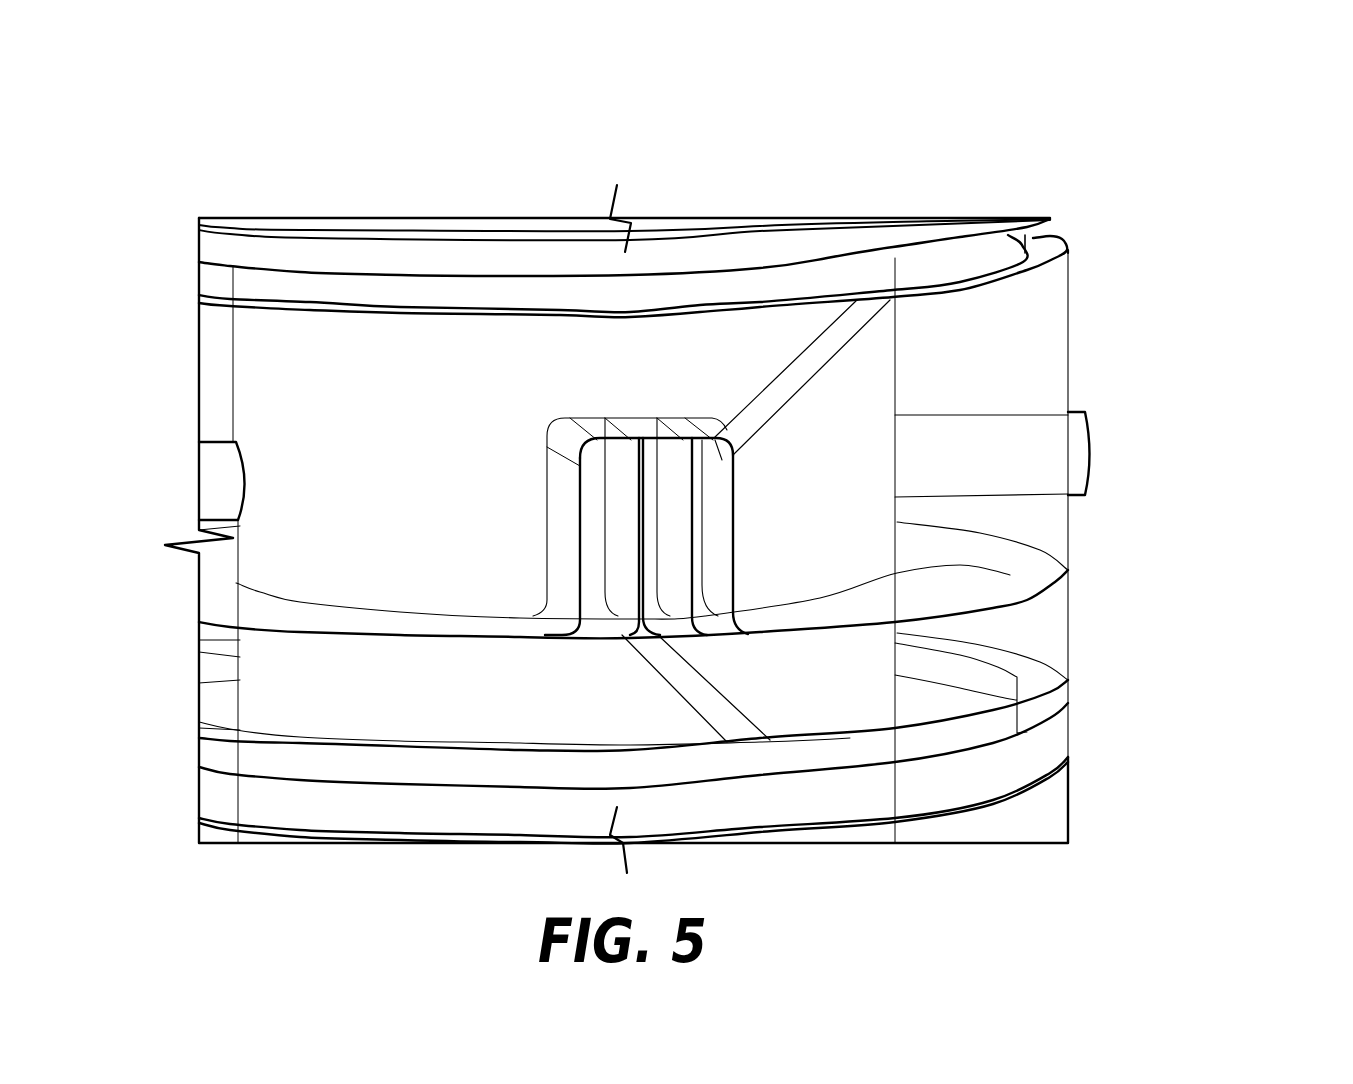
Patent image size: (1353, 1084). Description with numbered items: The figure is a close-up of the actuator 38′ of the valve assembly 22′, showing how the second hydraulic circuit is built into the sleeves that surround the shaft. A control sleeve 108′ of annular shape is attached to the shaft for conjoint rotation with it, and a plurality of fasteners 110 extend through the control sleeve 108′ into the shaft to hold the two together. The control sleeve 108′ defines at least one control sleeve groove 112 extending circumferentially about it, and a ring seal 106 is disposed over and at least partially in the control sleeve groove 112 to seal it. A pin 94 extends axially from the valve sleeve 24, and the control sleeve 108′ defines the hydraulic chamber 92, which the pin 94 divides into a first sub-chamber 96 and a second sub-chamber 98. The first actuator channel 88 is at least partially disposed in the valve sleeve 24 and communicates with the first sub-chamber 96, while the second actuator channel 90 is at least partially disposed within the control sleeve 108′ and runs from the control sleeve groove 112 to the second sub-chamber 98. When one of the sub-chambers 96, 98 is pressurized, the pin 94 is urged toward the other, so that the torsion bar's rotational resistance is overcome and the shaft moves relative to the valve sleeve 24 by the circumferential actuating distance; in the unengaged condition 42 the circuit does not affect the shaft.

The valve assembly 22′ is at (190, 123).
The ring seal 106 is at (212, 248).
The control sleeve 108′ is at (213, 367).
The fastener 110 is at (217, 498).
The first actuator channel 88 is at (710, 706).
The first sub-chamber 96 is at (587, 515).
The second sub-chamber 98 is at (727, 493).
The unengaged condition 42 is at (617, 401).
The second actuator channel 90 is at (828, 345).
The control sleeve groove 112 is at (1033, 238).
The actuator 38′ is at (1133, 356).
The pin 94 is at (667, 540).
The hydraulic chamber 92 is at (718, 582).
The valve sleeve 24 is at (1072, 805).